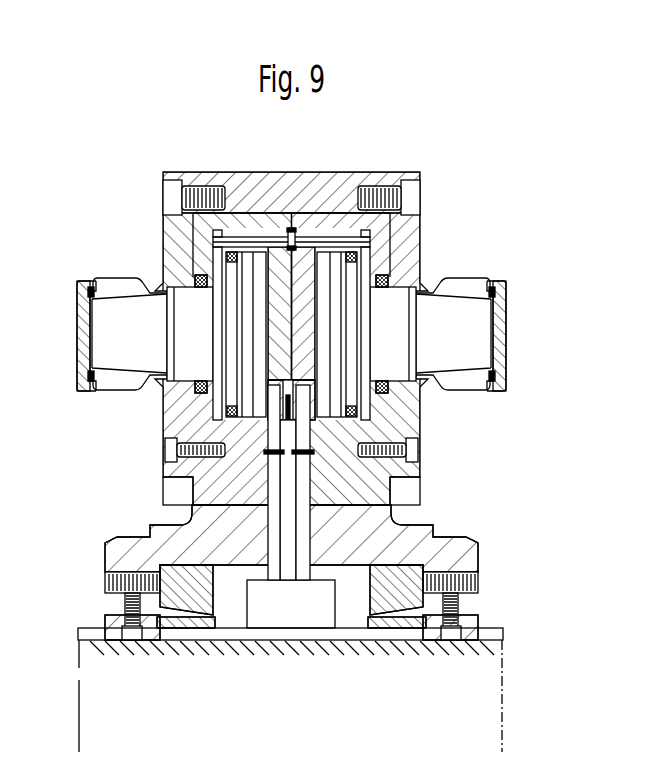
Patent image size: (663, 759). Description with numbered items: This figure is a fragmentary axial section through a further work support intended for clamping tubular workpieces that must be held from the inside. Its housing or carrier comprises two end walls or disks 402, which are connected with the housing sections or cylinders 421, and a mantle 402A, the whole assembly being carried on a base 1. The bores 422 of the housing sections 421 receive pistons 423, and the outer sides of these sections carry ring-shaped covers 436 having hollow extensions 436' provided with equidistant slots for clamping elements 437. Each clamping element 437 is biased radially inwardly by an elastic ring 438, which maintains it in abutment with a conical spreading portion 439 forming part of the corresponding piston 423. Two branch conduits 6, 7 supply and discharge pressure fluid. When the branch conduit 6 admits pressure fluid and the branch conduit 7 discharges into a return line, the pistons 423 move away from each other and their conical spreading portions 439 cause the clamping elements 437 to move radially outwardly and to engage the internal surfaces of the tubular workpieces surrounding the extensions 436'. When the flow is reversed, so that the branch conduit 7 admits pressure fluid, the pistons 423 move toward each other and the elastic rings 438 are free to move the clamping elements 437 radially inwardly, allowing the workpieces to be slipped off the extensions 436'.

The mantle 402A is at (236, 178).
The end wall 402 is at (120, 543).
The housing section 421 is at (317, 224).
The bore 422 is at (253, 257).
The piston 423 is at (212, 388).
The ring-shaped cover 436 is at (301, 235).
The hollow extension 436' is at (286, 364).
The clamping element 437 is at (122, 279).
The elastic ring 438 is at (87, 281).
The conical spreading portion 439 is at (107, 333).
The base plate 1 is at (487, 682).
The branch conduit 6 is at (277, 572).
The branch conduit 7 is at (305, 578).